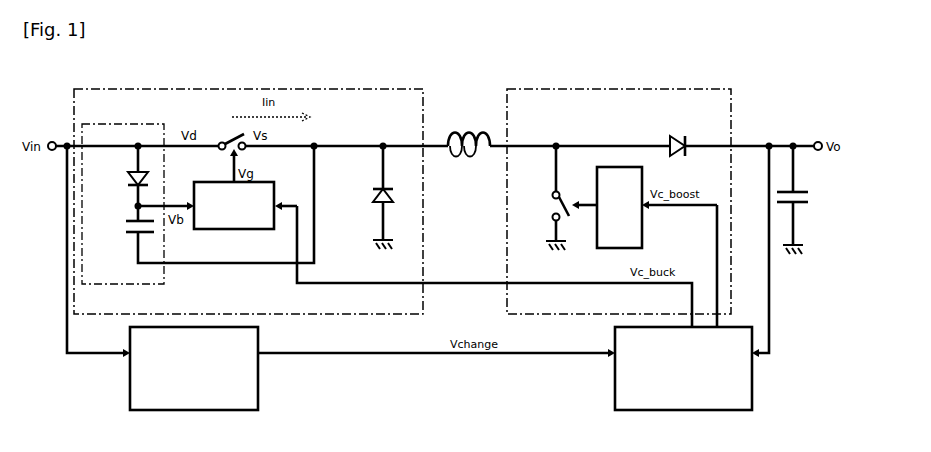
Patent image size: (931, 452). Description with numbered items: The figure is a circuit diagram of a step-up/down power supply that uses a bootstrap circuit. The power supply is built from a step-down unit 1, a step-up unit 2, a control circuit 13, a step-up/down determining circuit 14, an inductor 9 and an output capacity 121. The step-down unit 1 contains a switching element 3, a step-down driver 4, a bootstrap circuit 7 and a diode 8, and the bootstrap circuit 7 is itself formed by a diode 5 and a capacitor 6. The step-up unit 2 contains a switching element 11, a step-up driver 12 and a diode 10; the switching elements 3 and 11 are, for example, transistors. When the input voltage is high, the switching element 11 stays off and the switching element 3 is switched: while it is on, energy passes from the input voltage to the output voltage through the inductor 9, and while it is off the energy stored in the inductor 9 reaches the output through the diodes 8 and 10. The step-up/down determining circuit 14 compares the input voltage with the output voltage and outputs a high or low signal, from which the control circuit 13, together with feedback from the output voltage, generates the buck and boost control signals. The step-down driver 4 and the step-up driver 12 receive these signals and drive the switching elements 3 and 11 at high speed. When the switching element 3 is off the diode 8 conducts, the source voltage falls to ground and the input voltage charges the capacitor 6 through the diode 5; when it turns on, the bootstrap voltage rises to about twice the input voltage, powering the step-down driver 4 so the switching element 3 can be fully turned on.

The step-down unit 1 is at (135, 97).
The step-up unit 2 is at (541, 97).
The switching element 3 is at (219, 139).
The step-down driver 4 is at (194, 186).
The diode 5 is at (127, 180).
The capacitor 6 is at (127, 236).
The bootstrap circuit 7 is at (128, 276).
The diode 8 is at (372, 194).
The inductor 9 is at (458, 128).
The diode 10 is at (670, 140).
The switching element 11 is at (550, 198).
The step-up driver 12 is at (598, 248).
The control circuit 13 is at (614, 398).
The step-up/down determining circuit 14 is at (205, 410).
The output capacity 121 is at (806, 212).